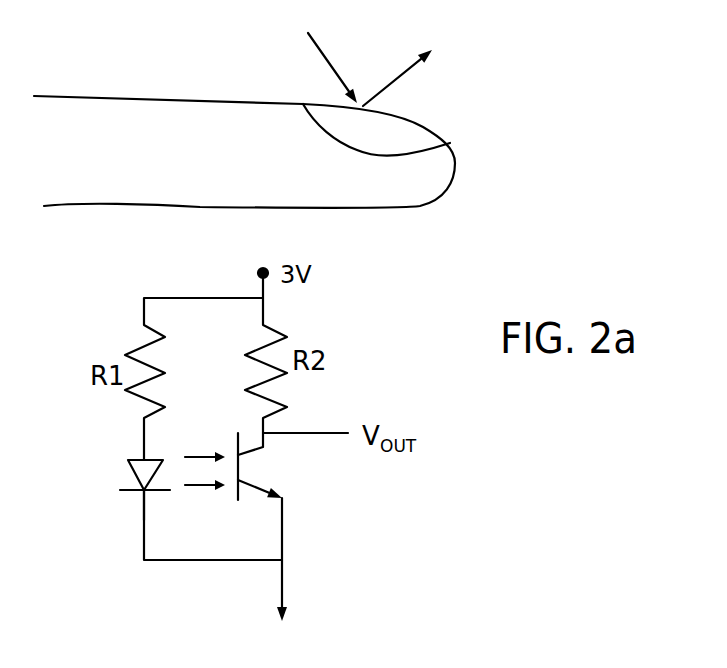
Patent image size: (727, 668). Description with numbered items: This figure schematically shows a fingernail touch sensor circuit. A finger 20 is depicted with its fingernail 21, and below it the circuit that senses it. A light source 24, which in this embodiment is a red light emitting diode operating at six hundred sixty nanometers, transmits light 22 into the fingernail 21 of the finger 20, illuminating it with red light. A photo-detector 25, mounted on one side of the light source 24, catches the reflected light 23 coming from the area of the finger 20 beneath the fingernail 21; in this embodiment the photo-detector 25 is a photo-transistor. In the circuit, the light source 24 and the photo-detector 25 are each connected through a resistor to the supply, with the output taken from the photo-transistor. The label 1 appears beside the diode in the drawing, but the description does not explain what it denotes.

The finger 20 is at (132, 102).
The fingernail 21 is at (420, 130).
The light 22 is at (319, 56).
The reflected light 23 is at (415, 71).
The light source 24 is at (121, 485).
The photo-detector 25 is at (270, 468).
The diode cathode terminal 1 is at (136, 506).